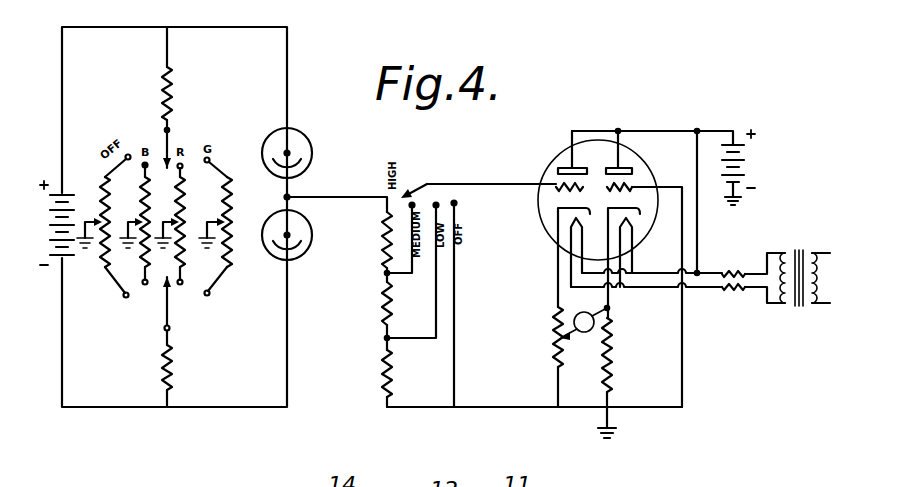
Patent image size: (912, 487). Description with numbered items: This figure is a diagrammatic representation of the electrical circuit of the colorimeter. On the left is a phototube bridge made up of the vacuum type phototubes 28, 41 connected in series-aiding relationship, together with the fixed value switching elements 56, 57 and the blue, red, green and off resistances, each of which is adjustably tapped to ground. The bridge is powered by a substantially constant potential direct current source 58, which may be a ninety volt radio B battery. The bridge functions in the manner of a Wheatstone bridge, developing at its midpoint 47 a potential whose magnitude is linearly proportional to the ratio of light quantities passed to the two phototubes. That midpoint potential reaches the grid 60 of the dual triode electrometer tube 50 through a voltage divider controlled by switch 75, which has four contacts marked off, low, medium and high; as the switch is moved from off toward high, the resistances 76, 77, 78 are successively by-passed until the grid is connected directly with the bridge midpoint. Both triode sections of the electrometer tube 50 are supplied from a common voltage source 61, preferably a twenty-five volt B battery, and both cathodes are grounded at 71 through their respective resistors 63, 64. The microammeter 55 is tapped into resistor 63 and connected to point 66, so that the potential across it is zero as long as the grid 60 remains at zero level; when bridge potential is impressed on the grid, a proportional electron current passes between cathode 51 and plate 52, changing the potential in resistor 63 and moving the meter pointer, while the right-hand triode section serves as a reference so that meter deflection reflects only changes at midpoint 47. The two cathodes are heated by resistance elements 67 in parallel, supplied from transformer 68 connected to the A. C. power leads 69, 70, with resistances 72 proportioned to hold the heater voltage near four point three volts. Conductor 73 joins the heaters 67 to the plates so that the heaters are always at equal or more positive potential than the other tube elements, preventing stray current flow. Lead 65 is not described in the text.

The phototube 28 is at (312, 235).
The phototube 41 is at (312, 152).
The midpoint 47 is at (296, 194).
The electrometer tube 50 is at (548, 172).
The cathode 51 is at (558, 228).
The plate 52 is at (560, 168).
The microammeter 55 is at (584, 333).
The fixed value switching element 56 is at (172, 95).
The fixed value switching element 57 is at (173, 372).
The direct current source 58 is at (72, 195).
The grid 60 is at (556, 192).
The voltage source 61 is at (745, 168).
The resistor 63 is at (553, 336).
The resistor 64 is at (612, 350).
The conductor 65 is at (556, 307).
The point 66 is at (612, 308).
The resistance elements 67 is at (571, 255).
The transformer 68 is at (785, 308).
The A. C. power lead 69 is at (822, 253).
The A. C. power lead 70 is at (822, 305).
The ground 71 is at (612, 428).
The resistances 72 is at (738, 272).
The conductor 73 is at (699, 222).
The switch 75 is at (440, 170).
The resistance 76 is at (382, 374).
The resistance 77 is at (382, 307).
The resistance 78 is at (382, 258).